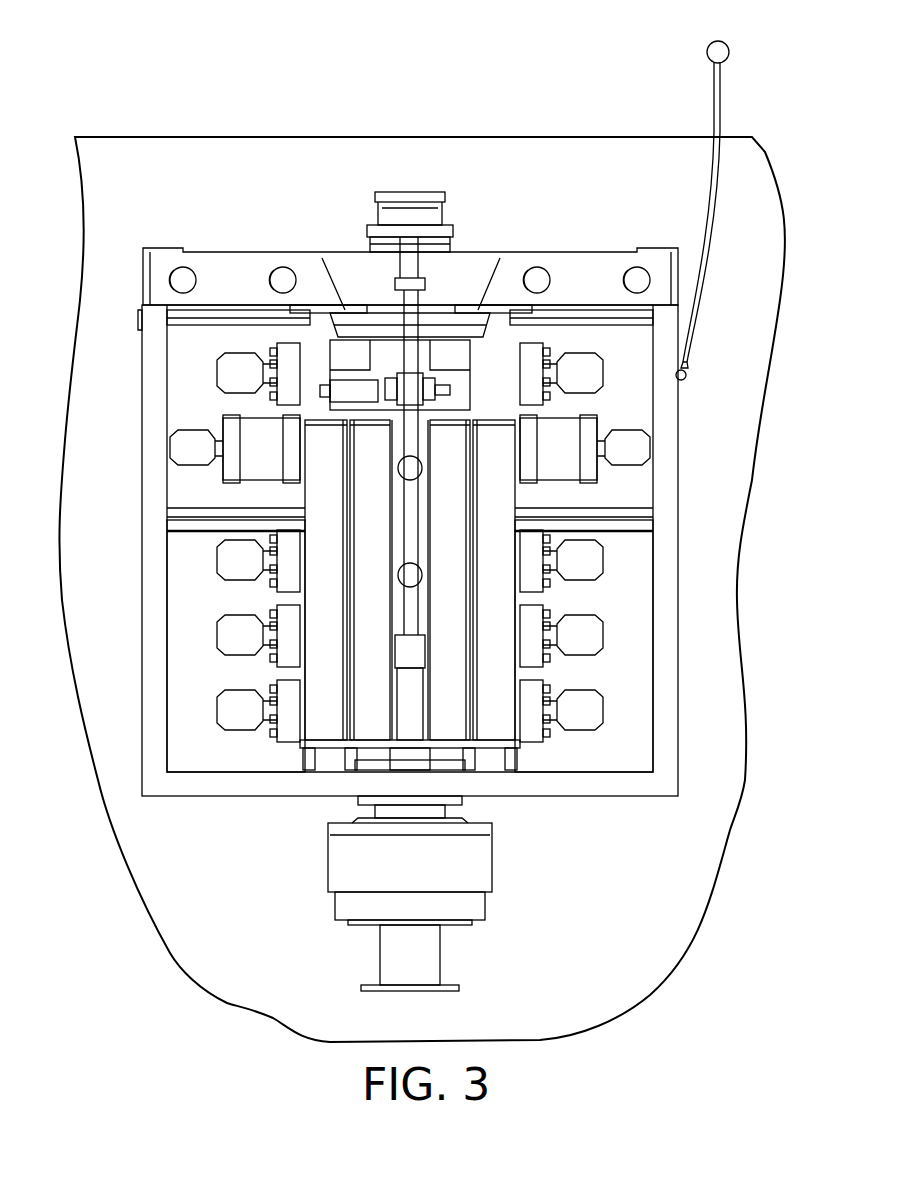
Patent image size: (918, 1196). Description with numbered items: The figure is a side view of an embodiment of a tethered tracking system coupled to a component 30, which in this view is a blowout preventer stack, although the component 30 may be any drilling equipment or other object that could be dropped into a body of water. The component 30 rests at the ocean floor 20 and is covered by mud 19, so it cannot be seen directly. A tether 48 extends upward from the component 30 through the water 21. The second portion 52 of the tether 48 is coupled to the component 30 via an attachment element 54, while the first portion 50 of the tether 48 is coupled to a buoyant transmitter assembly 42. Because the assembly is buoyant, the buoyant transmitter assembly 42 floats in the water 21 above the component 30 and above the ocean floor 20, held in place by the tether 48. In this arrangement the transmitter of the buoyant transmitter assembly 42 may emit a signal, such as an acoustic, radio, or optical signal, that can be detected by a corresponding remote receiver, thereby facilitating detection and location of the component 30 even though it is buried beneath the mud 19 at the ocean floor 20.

The mud 19 is at (725, 500).
The ocean floor 20 is at (412, 136).
The water 21 is at (164, 102).
The component 30 is at (127, 272).
The buoyant transmitter assembly 42 is at (705, 198).
The tether 48 is at (714, 120).
The first portion of the tether 50 is at (722, 96).
The second portion of the tether 52 is at (686, 362).
The attachment element 54 is at (682, 378).